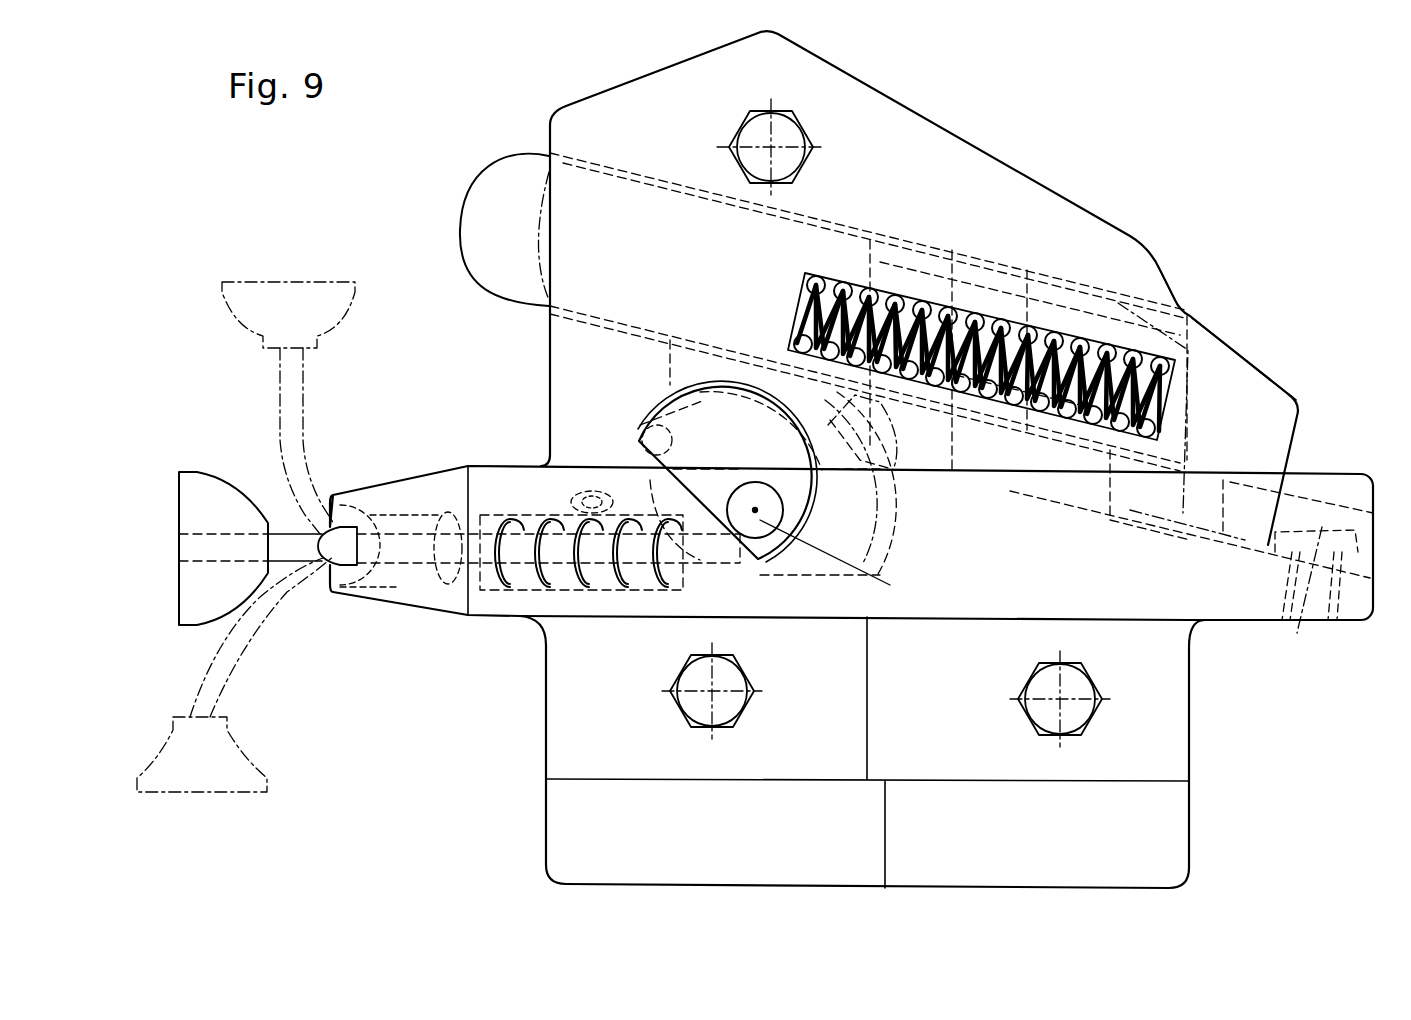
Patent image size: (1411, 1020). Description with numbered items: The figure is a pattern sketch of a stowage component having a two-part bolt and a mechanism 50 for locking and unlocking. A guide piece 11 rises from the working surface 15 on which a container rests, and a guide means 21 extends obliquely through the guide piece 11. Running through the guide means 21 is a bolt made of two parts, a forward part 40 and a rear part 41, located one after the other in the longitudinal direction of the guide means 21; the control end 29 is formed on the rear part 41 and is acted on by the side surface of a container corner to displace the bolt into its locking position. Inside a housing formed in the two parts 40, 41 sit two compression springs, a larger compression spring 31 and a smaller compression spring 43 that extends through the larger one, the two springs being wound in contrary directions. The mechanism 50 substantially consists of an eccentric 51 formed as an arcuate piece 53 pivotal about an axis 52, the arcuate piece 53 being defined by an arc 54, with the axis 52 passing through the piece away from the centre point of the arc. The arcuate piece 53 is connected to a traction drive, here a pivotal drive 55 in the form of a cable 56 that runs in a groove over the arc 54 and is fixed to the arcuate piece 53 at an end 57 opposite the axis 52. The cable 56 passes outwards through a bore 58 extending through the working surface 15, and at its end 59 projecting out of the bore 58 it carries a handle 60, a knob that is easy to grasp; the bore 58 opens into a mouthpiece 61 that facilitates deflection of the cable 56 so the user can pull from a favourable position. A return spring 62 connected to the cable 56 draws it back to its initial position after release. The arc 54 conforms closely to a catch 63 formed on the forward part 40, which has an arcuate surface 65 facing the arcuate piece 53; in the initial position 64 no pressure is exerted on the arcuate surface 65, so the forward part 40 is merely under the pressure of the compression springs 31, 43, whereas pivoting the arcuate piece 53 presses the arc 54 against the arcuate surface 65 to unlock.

The guide piece 11 is at (940, 150).
The working surface 15 is at (1332, 472).
The guide means 21 is at (560, 172).
The control end 29 is at (1280, 436).
The compression spring 31 is at (847, 285).
The forward part 40 is at (704, 286).
The rear part 41 is at (1217, 355).
The smaller compression spring 43 is at (947, 317).
The mechanism for locking and unlocking 50 is at (600, 394).
The eccentric 51 is at (867, 508).
The axis 52 is at (757, 511).
The arcuate piece 53 is at (740, 459).
The arc 54 is at (703, 387).
The pivotal drive 55 is at (718, 556).
The cable 56 is at (846, 562).
The end 57 is at (652, 440).
The bore 58 is at (401, 527).
The end 59 is at (306, 371).
The handle 60 is at (260, 292).
The mouthpiece 61 is at (333, 578).
The return spring 62 is at (622, 580).
The catch 63 is at (942, 452).
The initial position 64 is at (663, 407).
The arcuate surface 65 is at (873, 418).